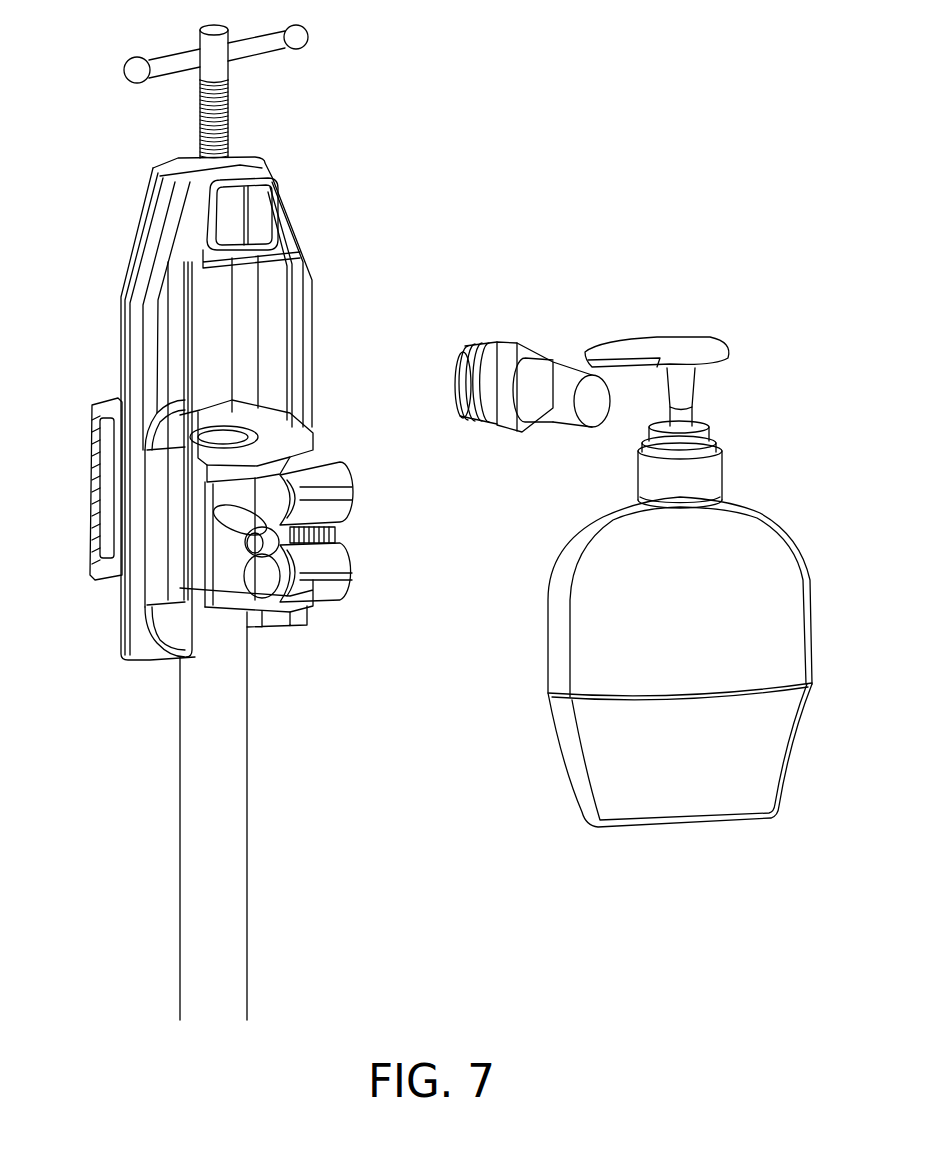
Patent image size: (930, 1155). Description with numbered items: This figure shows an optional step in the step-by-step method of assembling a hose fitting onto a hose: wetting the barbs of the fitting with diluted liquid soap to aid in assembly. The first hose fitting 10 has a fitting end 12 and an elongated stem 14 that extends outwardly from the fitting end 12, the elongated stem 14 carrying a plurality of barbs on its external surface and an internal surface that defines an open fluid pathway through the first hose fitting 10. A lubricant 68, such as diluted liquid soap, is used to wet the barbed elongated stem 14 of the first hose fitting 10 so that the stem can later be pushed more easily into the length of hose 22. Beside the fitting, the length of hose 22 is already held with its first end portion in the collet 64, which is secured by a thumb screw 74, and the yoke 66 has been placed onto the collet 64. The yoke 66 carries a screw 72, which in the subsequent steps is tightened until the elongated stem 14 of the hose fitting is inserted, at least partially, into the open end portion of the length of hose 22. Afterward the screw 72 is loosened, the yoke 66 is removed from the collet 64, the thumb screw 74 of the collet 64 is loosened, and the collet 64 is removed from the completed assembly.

The first hose fitting 10 is at (539, 353).
The fitting end 12 is at (495, 343).
The elongated stem 14 is at (555, 412).
The length of hose 22 is at (234, 832).
The collet 64 is at (364, 578).
The yoke 66 is at (130, 262).
The lubricant 68 is at (583, 753).
The screw 72 is at (135, 72).
The thumb screw 74 is at (258, 580).